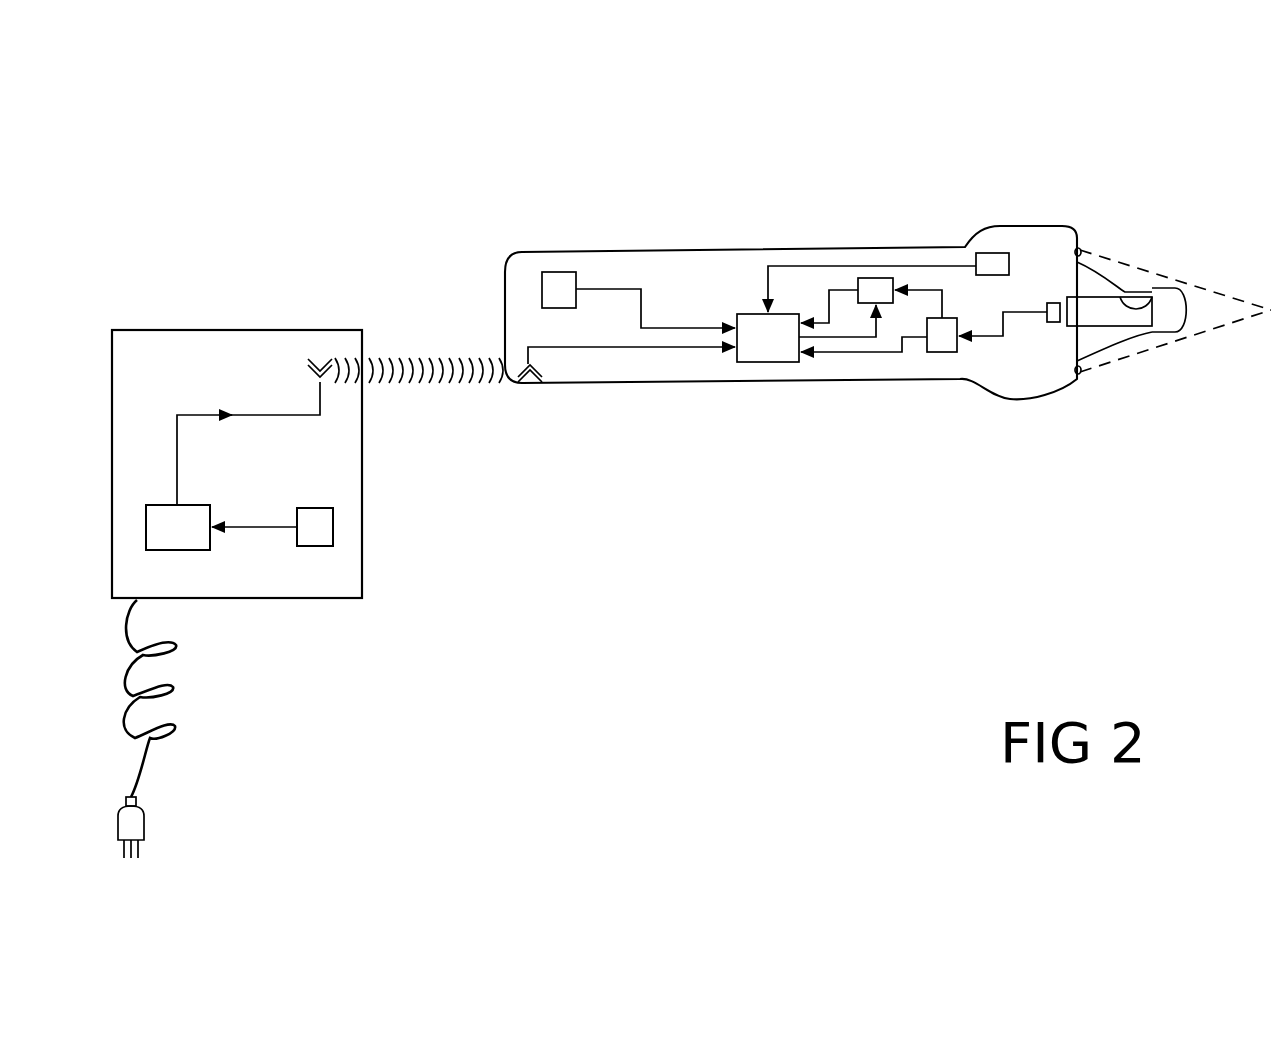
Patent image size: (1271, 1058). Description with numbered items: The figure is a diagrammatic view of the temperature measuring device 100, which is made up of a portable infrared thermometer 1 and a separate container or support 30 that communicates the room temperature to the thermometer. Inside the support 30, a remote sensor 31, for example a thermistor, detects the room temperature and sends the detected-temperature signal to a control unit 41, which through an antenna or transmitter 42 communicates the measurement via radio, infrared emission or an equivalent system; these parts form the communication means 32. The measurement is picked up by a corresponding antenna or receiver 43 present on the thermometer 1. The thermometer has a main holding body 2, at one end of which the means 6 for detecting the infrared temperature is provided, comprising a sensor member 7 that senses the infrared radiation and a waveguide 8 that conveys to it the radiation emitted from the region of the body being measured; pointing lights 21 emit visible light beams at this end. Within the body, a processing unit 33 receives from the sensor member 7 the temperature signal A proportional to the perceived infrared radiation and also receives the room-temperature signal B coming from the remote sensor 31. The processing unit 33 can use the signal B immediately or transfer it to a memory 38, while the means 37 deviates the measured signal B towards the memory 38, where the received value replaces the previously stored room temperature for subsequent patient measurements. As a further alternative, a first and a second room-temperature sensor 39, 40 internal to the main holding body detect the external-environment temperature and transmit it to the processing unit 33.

The infrared thermometer 1 is at (661, 325).
The main holding body 2 is at (650, 250).
The means for detecting the infrared temperature 6 is at (1087, 286).
The sensor member 7 is at (1055, 302).
The waveguide 8 is at (1152, 297).
The pointing lights 21 is at (1080, 372).
The container or support 30 is at (311, 599).
The remote sensor 31 is at (322, 528).
The communication means 32 is at (212, 397).
The processing unit 33 is at (753, 333).
The means for detecting the temperature of the reference element 37 is at (943, 352).
The memory 38 is at (876, 288).
The first room-temperature sensor 39 is at (998, 258).
The second room-temperature sensor 40 is at (560, 287).
The control unit 41 is at (184, 547).
The antenna or transmitter 42 is at (320, 404).
The antenna or receiver 43 is at (530, 355).
The temperature measuring device 100 is at (647, 567).
The temperature signal A is at (860, 352).
The room-temperature signal B is at (842, 290).